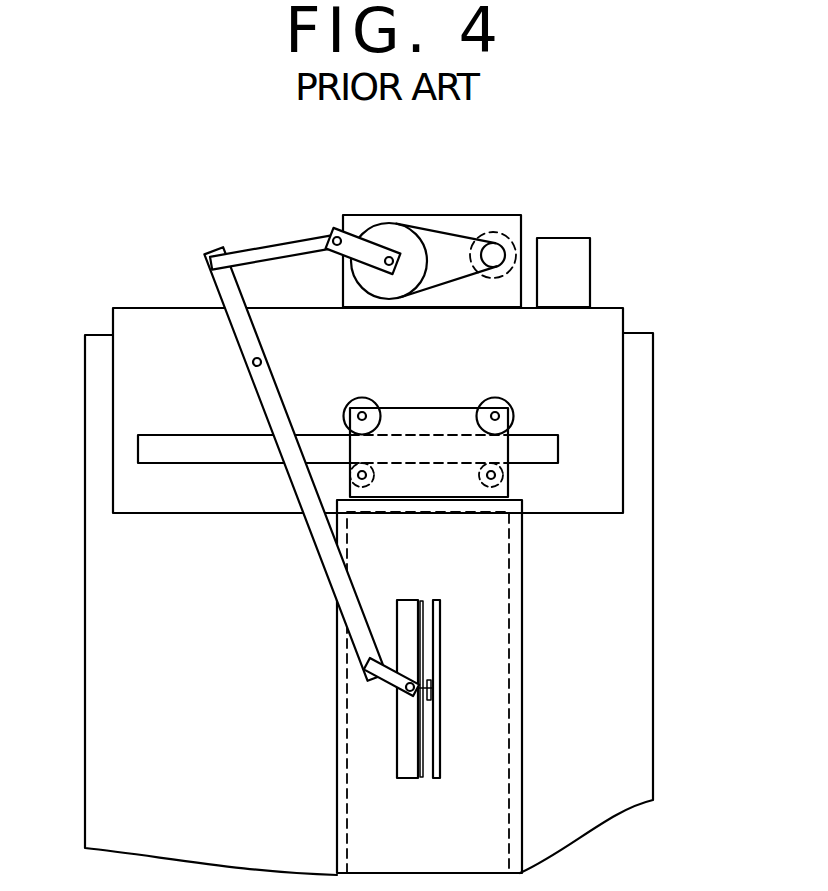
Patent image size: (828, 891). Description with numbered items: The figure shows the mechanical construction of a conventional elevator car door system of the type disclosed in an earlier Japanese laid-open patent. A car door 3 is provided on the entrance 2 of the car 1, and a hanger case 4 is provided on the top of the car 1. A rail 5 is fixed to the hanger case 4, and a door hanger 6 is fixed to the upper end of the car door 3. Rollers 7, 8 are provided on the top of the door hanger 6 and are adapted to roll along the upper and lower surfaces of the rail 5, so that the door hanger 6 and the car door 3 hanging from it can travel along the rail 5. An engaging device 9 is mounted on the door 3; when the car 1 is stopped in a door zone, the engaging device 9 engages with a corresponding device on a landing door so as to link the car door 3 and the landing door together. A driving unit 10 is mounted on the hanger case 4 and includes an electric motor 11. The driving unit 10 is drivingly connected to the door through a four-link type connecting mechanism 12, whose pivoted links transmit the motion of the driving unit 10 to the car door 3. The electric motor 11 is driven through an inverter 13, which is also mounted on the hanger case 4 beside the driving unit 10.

The car 1 is at (652, 623).
The entrance 2 is at (348, 695).
The car door 3 is at (488, 658).
The hanger case 4 is at (613, 307).
The rail 5 is at (193, 450).
The door hanger 6 is at (427, 408).
The rollers 7 is at (493, 398).
The rollers 8 is at (503, 473).
The engaging device 9 is at (424, 780).
The driving unit 10 is at (437, 215).
The electric motor 11 is at (503, 230).
The 4-link type connecting mechanism 12 is at (258, 397).
The inverter 13 is at (590, 250).